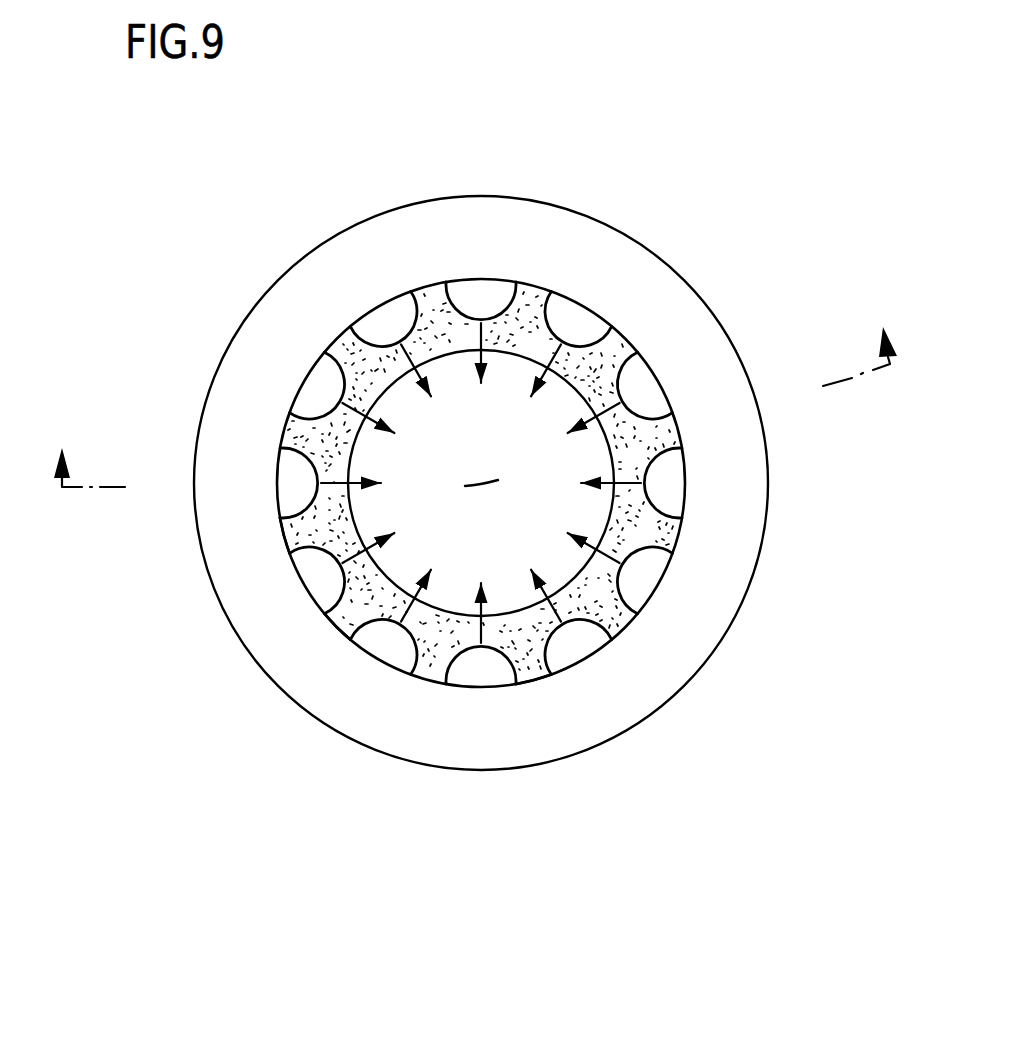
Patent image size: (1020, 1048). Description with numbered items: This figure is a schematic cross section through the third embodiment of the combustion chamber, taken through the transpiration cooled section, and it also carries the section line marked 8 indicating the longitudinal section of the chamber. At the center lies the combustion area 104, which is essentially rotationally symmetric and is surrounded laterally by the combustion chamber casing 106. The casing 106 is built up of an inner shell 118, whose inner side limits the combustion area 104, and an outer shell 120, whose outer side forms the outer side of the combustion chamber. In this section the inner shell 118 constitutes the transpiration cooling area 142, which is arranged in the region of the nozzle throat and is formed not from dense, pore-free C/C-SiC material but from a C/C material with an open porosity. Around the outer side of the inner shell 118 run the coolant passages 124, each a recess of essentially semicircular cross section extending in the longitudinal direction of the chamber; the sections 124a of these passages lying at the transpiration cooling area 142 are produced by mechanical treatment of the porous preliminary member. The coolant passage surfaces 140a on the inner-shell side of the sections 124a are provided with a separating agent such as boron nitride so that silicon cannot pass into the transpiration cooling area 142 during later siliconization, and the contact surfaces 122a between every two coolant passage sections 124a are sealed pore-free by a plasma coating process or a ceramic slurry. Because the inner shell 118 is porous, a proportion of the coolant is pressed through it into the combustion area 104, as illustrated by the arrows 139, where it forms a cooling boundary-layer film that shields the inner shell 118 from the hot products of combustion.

The combustion chamber casing 106 is at (495, 484).
The outer shell 120 is at (735, 491).
The inner shell 118 is at (667, 538).
The transpiration cooling area 142 is at (538, 701).
The contact surfaces 122a is at (338, 627).
The coolant passages 124 is at (497, 670).
The sections of the coolant passages 124a is at (648, 390).
The arrows 139 is at (483, 627).
The coolant passage surfaces 140a is at (417, 317).
The combustion area 104 is at (508, 463).
The section line 8- 8 is at (481, 425).